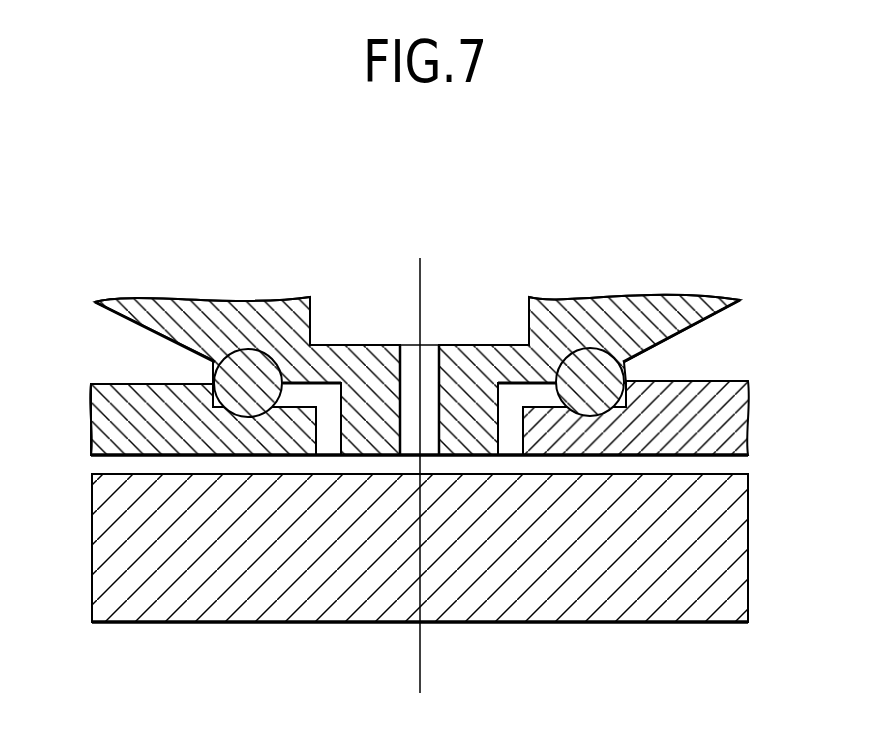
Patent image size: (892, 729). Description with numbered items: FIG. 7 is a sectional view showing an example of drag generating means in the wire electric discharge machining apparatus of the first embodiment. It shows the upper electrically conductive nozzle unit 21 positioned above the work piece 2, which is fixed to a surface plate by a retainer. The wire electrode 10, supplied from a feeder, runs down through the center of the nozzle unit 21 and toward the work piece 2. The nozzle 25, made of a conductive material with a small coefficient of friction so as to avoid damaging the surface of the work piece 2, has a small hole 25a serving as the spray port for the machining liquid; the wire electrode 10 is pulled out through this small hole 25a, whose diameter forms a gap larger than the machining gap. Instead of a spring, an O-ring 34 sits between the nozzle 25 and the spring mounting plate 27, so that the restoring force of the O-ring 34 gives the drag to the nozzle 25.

The work piece 2 is at (737, 538).
The wire electrode 10 is at (421, 645).
The electrically conductive nozzle unit 21 is at (115, 353).
The nozzle 25 is at (222, 303).
The small hole 25a is at (432, 353).
The spring mounting plate 27 is at (740, 406).
The O-ring 34 is at (623, 373).